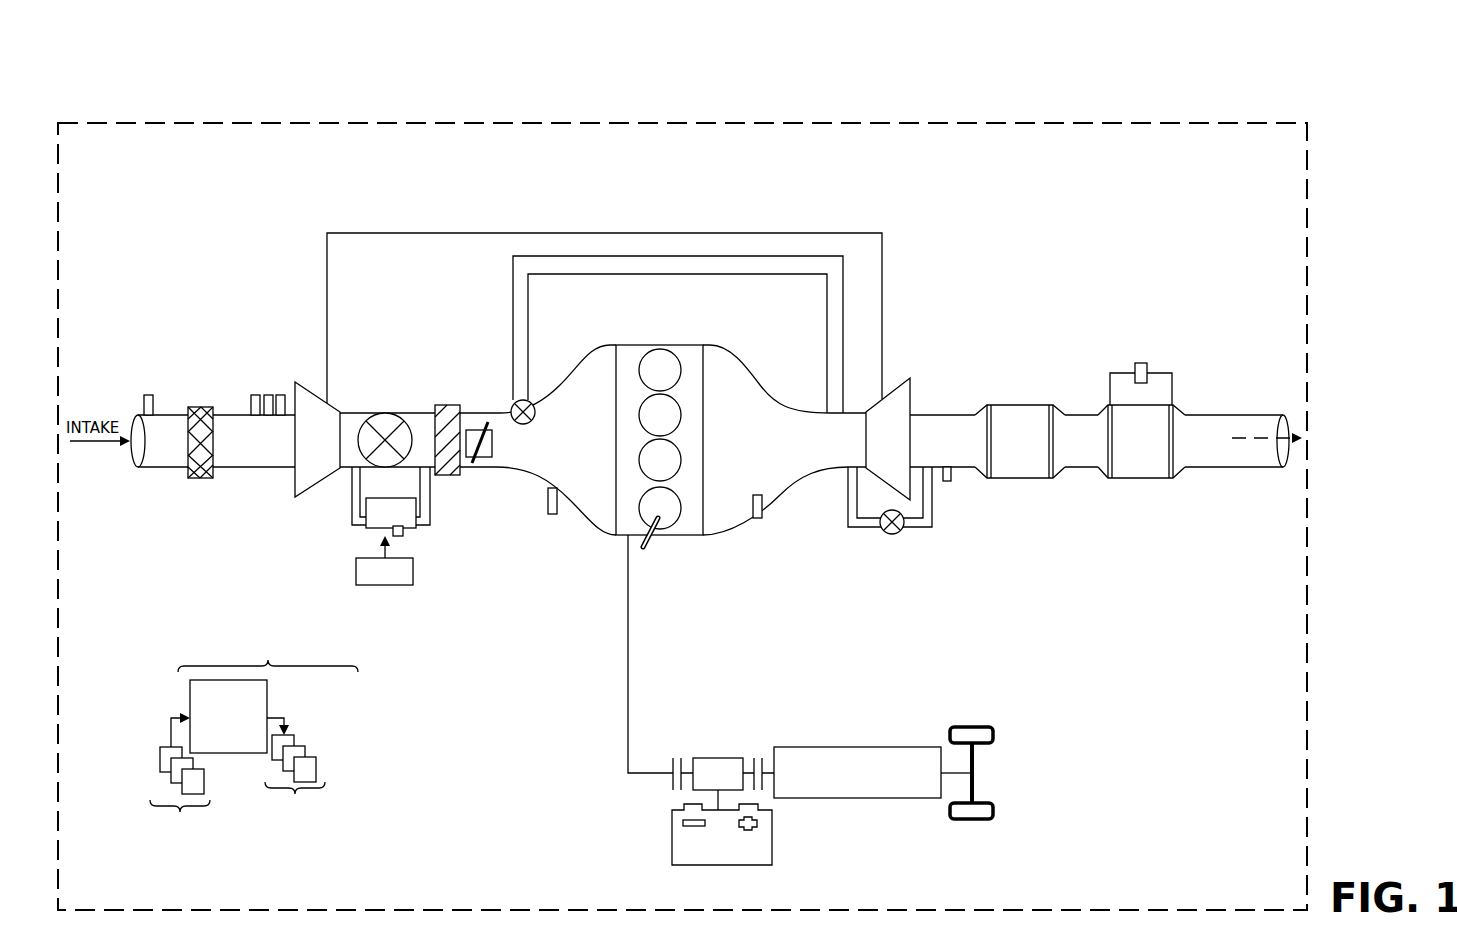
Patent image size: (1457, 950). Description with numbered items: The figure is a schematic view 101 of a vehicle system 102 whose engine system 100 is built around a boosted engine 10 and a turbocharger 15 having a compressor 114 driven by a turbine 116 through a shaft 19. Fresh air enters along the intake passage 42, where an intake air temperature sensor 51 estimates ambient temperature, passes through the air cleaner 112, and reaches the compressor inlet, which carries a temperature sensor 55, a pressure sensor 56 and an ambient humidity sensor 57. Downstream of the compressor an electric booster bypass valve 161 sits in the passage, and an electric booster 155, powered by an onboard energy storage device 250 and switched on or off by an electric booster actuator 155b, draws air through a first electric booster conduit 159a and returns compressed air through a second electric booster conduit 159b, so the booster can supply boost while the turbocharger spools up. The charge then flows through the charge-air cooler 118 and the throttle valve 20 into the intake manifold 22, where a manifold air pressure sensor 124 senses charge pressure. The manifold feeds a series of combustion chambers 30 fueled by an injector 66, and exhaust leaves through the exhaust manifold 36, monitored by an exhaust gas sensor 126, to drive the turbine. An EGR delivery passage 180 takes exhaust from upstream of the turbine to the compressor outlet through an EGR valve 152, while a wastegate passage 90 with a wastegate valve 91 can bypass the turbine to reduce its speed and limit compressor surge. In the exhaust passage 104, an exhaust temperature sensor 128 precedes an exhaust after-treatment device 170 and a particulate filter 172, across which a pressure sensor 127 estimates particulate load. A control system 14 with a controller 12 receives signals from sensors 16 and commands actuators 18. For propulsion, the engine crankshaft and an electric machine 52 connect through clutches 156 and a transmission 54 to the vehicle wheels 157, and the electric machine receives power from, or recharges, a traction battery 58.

The schematic view 101 is at (1338, 48).
The vehicle system 102 is at (231, 121).
The engine system 100 is at (1143, 303).
The intake passage 42 is at (153, 472).
The intake air temperature sensor 51 is at (148, 394).
The air cleaner 112 is at (197, 405).
The temperature sensor 55 is at (255, 394).
The pressure sensor 56 is at (268, 394).
The ambient humidity sensor 57 is at (280, 394).
The turbocharger 15 is at (584, 451).
The compressor 114 is at (317, 439).
The turbine 116 is at (888, 439).
The electric booster bypass valve 161 is at (386, 412).
The first electric booster conduit 159a is at (352, 522).
The second electric booster conduit 159b is at (430, 516).
The electric booster 155 is at (391, 513).
The electric booster actuator 155b is at (402, 533).
The onboard energy storage device 250 is at (384, 561).
The charge-air cooler 118 is at (450, 404).
The throttle valve 20 is at (497, 433).
The intake manifold 22 is at (556, 440).
The EGR valve 152 is at (536, 411).
The manifold air pressure sensor 124 is at (547, 505).
The engine 10 is at (672, 440).
The combustion chambers 30 is at (681, 366).
The injector 66 is at (657, 540).
The exhaust manifold 36 is at (775, 440).
The exhaust gas sensor 126 is at (766, 504).
The shaft 19 is at (708, 232).
The EGR delivery passage 180 is at (667, 275).
The wastegate passage 90 is at (848, 528).
The wastegate valve 91 is at (890, 534).
The exhaust temperature sensor 128 is at (947, 481).
The exhaust after-treatment device 170 is at (1020, 441).
The particulate filter 172 is at (1141, 441).
The pressure sensor 127 is at (1143, 362).
The exhaust passage 104 is at (1240, 470).
The control system 14 is at (254, 733).
The controller 12 is at (228, 716).
The sensors 16 is at (184, 784).
The actuators 18 is at (308, 784).
The clutches 156 is at (672, 762).
The electric machine 52 is at (710, 757).
The transmission 54 is at (900, 798).
The vehicle wheels 157 is at (973, 820).
The traction battery 58 is at (773, 840).